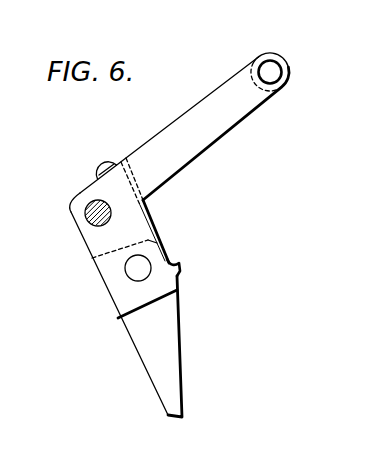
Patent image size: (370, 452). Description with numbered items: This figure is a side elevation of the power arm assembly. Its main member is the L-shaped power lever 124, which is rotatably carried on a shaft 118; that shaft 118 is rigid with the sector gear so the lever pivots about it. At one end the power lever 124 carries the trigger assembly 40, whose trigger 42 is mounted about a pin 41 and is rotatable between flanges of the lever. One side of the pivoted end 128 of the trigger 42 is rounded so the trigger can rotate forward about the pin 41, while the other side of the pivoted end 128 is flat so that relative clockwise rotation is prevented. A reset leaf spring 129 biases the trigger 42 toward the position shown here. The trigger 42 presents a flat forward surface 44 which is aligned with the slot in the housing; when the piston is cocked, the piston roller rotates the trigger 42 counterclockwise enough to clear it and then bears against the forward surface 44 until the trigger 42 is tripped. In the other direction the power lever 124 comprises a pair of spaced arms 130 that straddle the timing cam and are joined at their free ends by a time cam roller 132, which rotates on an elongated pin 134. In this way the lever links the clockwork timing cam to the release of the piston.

The trigger assembly 40 is at (124, 254).
The pin 41 is at (138, 281).
The trigger 42 is at (152, 384).
The flat forward surface 44 is at (148, 314).
The shaft 118 is at (85, 218).
The power lever 124 is at (197, 110).
The pivoted end 128 is at (150, 239).
The reset leaf spring 129 is at (170, 247).
The spaced arms 130 is at (217, 136).
The time cam roller 132 is at (227, 81).
The elongated pin 134 is at (276, 60).